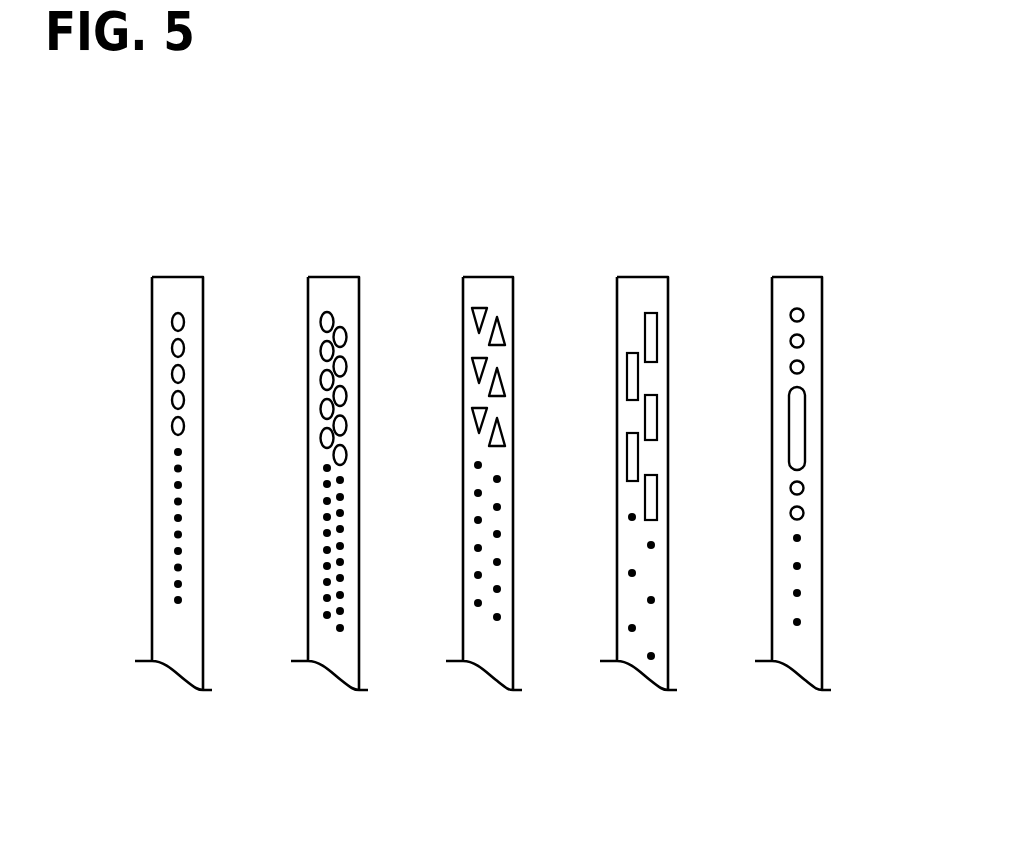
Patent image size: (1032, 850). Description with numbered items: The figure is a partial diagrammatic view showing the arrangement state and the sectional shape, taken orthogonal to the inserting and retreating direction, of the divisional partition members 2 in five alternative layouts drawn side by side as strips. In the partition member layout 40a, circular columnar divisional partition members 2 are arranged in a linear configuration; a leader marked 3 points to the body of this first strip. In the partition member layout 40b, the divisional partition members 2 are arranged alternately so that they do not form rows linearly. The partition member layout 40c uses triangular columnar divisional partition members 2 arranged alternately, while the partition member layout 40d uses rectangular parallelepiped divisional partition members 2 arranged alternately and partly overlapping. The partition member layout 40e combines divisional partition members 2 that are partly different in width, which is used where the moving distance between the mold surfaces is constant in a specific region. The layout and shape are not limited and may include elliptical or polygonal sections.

The divisional partition member 2 is at (177, 428).
The strip substrate 3 is at (185, 287).
The partition member layout 40a is at (173, 497).
The partition member layout 40b is at (327, 694).
The partition member layout 40c is at (486, 694).
The partition member layout 40d is at (640, 694).
The partition member layout 40e is at (793, 694).